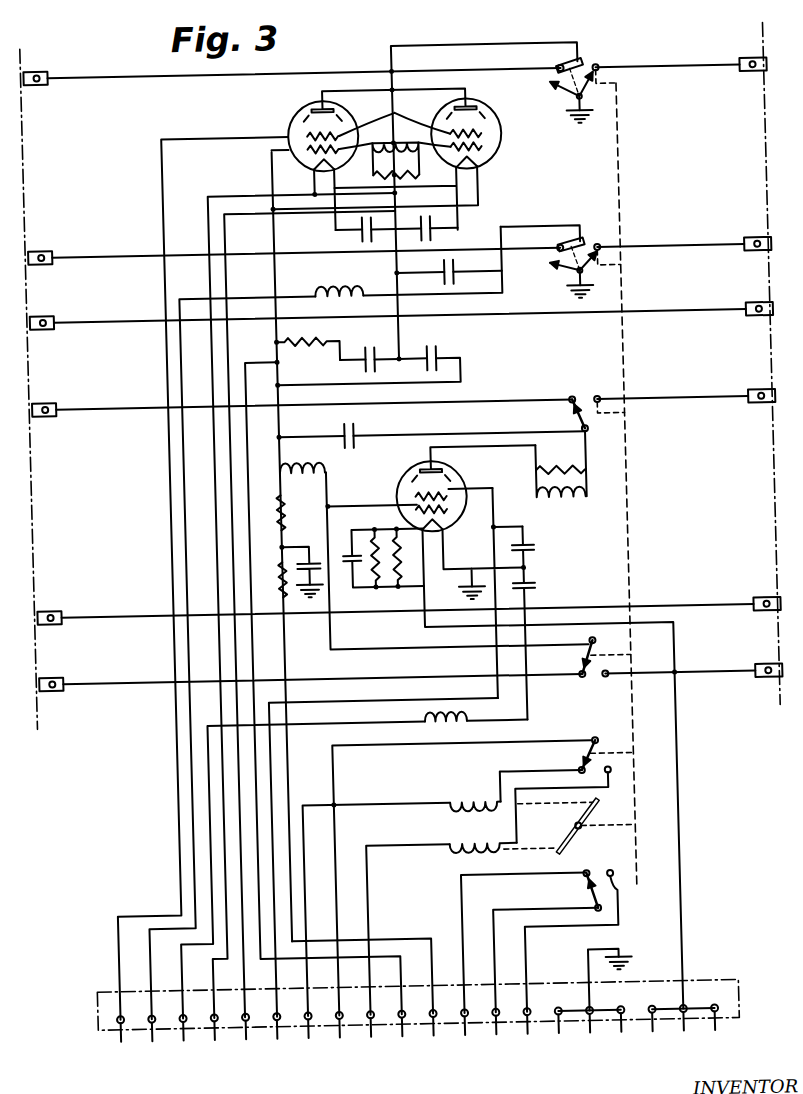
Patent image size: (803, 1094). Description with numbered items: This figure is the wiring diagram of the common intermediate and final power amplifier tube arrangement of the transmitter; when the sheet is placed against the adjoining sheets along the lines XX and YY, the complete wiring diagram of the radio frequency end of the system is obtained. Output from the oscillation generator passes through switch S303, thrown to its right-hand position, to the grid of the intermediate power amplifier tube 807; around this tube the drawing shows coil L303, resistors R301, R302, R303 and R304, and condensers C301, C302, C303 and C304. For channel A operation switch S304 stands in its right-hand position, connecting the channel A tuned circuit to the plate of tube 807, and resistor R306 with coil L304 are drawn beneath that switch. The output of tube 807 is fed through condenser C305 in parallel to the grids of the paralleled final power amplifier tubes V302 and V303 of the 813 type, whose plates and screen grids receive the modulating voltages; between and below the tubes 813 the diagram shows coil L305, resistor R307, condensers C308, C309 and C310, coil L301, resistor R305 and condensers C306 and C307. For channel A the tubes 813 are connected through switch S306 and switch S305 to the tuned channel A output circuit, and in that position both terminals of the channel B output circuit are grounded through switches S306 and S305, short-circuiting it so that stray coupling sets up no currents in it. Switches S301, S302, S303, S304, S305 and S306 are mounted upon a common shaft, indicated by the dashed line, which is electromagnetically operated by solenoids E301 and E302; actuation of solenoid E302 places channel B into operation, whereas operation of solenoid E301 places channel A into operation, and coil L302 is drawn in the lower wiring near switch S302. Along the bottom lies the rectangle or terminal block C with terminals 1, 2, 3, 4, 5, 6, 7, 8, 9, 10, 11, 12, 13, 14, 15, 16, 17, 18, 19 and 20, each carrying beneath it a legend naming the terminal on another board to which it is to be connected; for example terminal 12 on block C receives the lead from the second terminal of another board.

The final power amplifier tube 813 is at (381, 130).
The final power amplifier tube V302 is at (299, 126).
The final power amplifier tube V303 is at (504, 162).
The intermediate power amplifier tube 807 is at (419, 462).
The inductor L305 is at (418, 142).
The resistor R307 is at (413, 177).
The capacitor C308 is at (368, 236).
The capacitor C309 is at (441, 236).
The capacitor C310 is at (464, 284).
The inductor L301 is at (354, 282).
The resistor R305 is at (308, 349).
The capacitor C306 is at (387, 346).
The capacitor C307 is at (442, 346).
The condenser C305 is at (357, 427).
The switch S306 is at (596, 66).
The switch S305 is at (595, 244).
The switch S304 is at (586, 401).
The resistor R306 is at (561, 464).
The inductor L304 is at (548, 515).
The inductor L303 is at (310, 467).
The resistor R302 is at (274, 514).
The resistor R301 is at (275, 582).
The capacitor C303 is at (313, 558).
The capacitor C304 is at (342, 577).
The resistor R303 is at (392, 530).
The resistor R304 is at (405, 592).
The capacitor C302 is at (535, 551).
The capacitor C301 is at (535, 590).
The switch S303 is at (589, 681).
The inductor L302 is at (420, 727).
The switch S302 is at (572, 757).
The solenoid E302 is at (474, 795).
The solenoid E301 is at (484, 861).
The switch S301 is at (628, 894).
The line XX X is at (27, 390).
The line YY Y is at (771, 364).
The terminal block C is at (87, 1011).
The terminal 1 is at (121, 1047).
The terminal 2 is at (153, 1046).
The terminal 3 is at (184, 1046).
The terminal 4 is at (214, 1046).
The connector terminal P9 5 is at (245, 1045).
The connector terminal P27 6 is at (278, 1045).
The connector terminal A4 7 is at (308, 1045).
The connector terminal G14 8 is at (340, 1044).
The connector terminal A3 9 is at (370, 1044).
The connector terminal F24 10 is at (406, 1043).
The connector terminal F25 11 is at (437, 1042).
The terminal 12 is at (469, 1042).
The connector terminal E18 13 is at (500, 1041).
The connector terminal D2 14 is at (531, 1040).
The connector terminal B4 15 is at (562, 1040).
The connector terminal P19 16 is at (594, 1039).
The connector terminal D4 17 is at (625, 1038).
The connector terminal B3 18 is at (656, 1038).
The connector terminal P7 19 is at (687, 1037).
The connector terminal D3 20 is at (719, 1037).